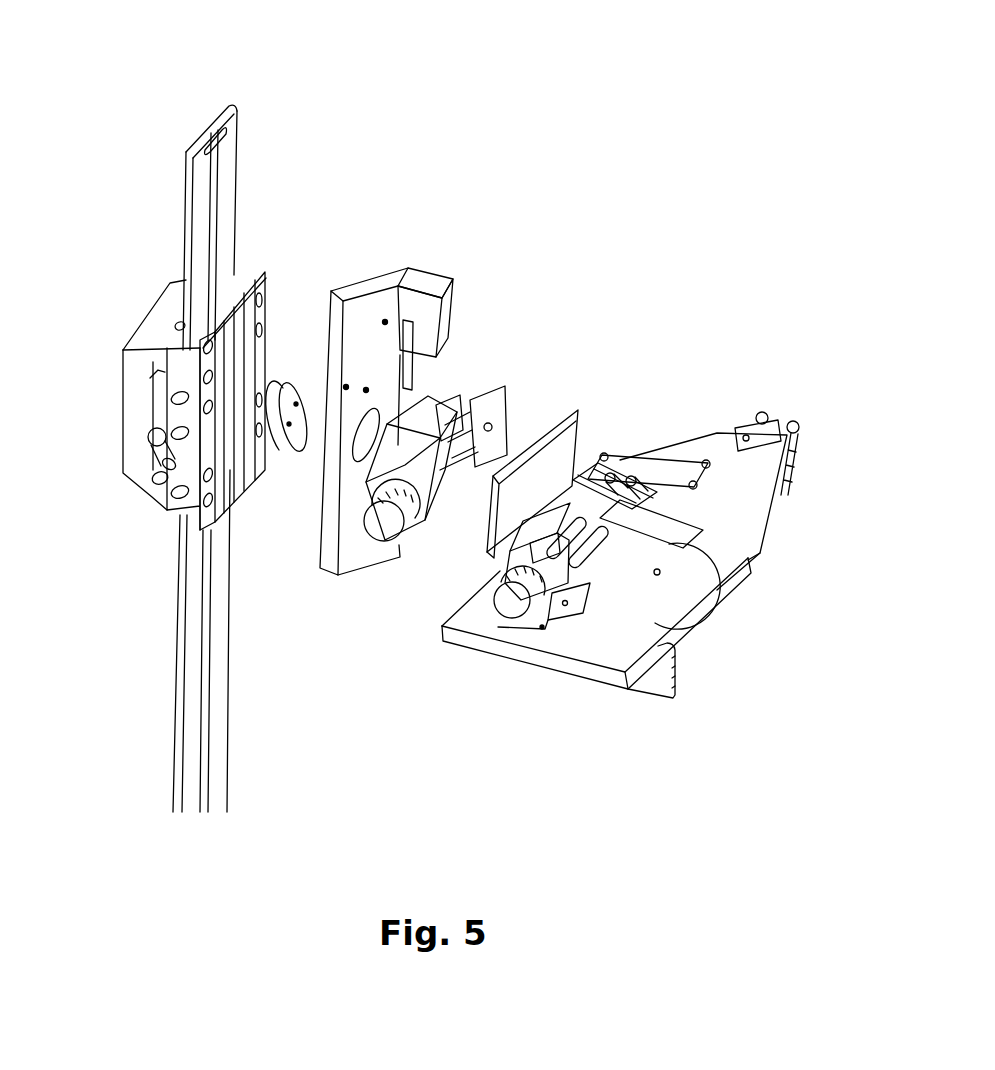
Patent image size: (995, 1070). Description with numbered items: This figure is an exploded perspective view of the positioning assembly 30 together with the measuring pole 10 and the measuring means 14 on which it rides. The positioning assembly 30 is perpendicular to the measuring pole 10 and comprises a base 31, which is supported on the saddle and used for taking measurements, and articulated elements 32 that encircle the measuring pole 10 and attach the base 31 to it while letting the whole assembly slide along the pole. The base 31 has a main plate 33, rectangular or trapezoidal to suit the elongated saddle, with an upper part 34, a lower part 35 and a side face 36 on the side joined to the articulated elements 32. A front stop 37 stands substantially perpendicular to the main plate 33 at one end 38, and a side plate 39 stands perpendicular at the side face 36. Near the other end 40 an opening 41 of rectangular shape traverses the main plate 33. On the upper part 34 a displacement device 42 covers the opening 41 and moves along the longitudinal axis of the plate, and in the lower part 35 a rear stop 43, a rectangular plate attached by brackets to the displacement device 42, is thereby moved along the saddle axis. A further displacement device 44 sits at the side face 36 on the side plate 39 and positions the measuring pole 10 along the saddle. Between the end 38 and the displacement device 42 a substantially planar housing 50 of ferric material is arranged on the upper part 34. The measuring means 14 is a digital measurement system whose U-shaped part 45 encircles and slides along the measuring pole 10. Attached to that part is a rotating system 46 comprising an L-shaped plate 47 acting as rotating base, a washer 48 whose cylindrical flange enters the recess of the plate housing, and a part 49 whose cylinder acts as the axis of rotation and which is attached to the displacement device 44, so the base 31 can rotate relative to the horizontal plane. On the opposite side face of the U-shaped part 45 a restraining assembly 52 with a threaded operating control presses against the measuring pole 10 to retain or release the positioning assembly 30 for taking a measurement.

The measuring pole 10 is at (181, 157).
The measuring means 14 is at (150, 333).
The positioning assembly 30 is at (573, 135).
The base 31 is at (650, 372).
The articulated elements 32 is at (341, 195).
The main plate 33 is at (702, 432).
The upper part 34 is at (753, 474).
The lower part 35 is at (745, 598).
The side face 36 is at (453, 611).
The front stop 37 is at (760, 416).
The end 38 is at (784, 423).
The side plate 39 is at (574, 408).
The end 40 is at (468, 641).
The opening 41 is at (524, 606).
The displacement device 42 is at (690, 594).
The rear stop 43 is at (650, 692).
The displacement device 44 is at (478, 396).
The U-shaped part 45 is at (150, 378).
The rotating system 46 is at (285, 500).
The L-shaped plate 47 is at (367, 282).
The washer 48 is at (293, 381).
The part 49 is at (365, 530).
The planar housing 50 is at (710, 595).
The restraining assembly 52 is at (157, 508).